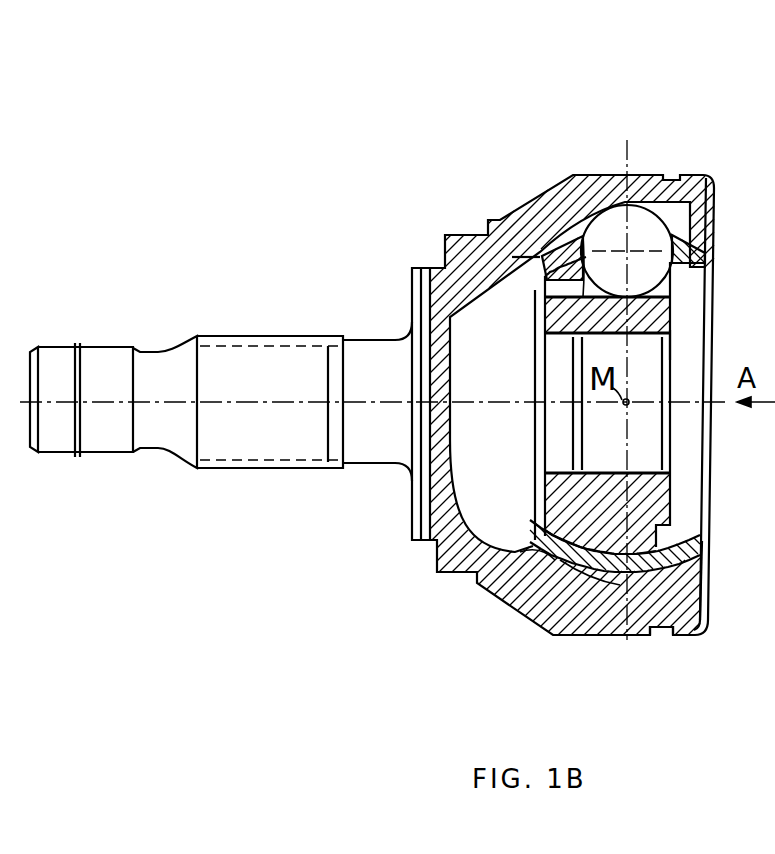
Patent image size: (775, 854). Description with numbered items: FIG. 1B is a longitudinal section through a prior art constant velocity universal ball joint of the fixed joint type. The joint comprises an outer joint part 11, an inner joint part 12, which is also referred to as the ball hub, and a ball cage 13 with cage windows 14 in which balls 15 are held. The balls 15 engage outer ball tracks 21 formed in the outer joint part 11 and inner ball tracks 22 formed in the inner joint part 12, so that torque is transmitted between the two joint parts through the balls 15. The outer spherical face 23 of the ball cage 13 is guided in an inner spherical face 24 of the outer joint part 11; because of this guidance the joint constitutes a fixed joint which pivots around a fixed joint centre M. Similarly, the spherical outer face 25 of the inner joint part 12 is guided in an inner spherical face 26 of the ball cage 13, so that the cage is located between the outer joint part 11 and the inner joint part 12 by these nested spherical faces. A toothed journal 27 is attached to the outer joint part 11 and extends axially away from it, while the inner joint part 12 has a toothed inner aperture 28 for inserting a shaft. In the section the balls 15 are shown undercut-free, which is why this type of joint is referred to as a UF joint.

The outer joint part 11 is at (501, 230).
The outer ball tracks 21 is at (541, 240).
The inner joint part 12 is at (565, 313).
The inner ball tracks 22 is at (580, 282).
The balls 15 is at (622, 230).
The cage windows 14 is at (667, 235).
The ball cage 13 is at (707, 225).
The outer spherical face 23 is at (680, 623).
The inner spherical face 24 is at (657, 603).
The spherical outer face 25 is at (588, 588).
The inner spherical face 26 is at (533, 615).
The toothed journal 27 is at (298, 357).
The toothed inner aperture 28 is at (680, 355).